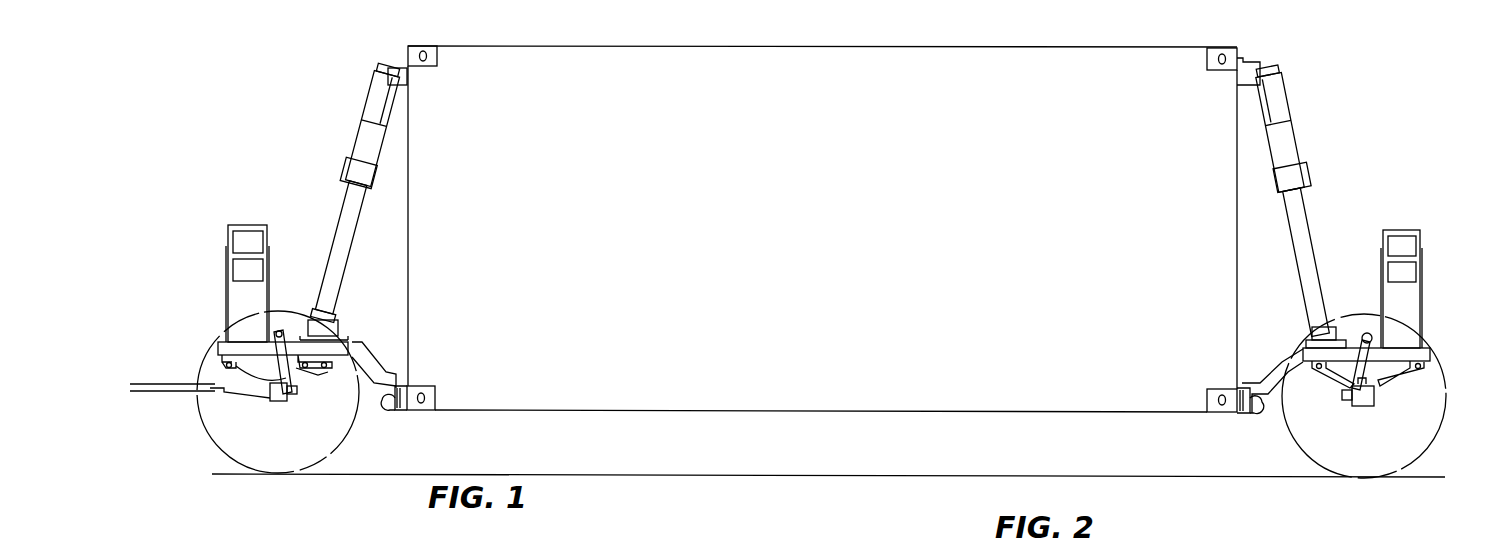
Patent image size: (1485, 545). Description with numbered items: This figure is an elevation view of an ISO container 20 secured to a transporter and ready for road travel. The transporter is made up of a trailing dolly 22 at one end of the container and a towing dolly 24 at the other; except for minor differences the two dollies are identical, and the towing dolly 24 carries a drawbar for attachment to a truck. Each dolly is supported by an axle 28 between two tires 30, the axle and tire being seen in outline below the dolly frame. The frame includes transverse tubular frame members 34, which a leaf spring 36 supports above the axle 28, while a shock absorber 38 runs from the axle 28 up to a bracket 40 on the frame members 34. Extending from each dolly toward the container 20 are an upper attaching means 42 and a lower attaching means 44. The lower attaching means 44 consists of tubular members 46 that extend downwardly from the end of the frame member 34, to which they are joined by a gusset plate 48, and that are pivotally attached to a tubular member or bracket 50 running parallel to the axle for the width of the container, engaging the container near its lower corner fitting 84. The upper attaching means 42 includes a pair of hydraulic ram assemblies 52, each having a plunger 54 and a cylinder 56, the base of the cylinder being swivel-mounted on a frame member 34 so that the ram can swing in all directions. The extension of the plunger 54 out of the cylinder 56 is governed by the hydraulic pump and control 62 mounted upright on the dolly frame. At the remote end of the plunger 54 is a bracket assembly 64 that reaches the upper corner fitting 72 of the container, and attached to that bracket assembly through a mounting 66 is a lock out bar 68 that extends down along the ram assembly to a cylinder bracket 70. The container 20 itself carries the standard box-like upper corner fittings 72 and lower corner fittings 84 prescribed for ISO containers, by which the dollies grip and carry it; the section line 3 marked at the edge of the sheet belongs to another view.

In FIG. 1, the ISO container 20 is at (802, 249).
In FIG. 1, the trailing dolly 22 is at (1334, 251).
In FIG. 2, the trailing dolly 22 is at (1408, 535).
In FIG. 1, the towing dolly 24 is at (309, 195).
In FIG. 2, the towing dolly 24 is at (262, 544).
In FIG. 1, the axle 28 is at (1362, 406).
In FIG. 1, the tire 30 is at (1430, 424).
In FIG. 2, the tire 30 is at (1304, 544).
In FIG. 1, the transverse tubular frame member 34 is at (1416, 355).
In FIG. 1, the leaf spring 36 is at (1398, 378).
In FIG. 1, the shock absorber 38 is at (1374, 396).
In FIG. 1, the bracket 40 is at (1366, 332).
In FIG. 1, the upper attaching means 42 is at (1315, 181).
In FIG. 1, the lower attaching means 44 is at (1277, 361).
In FIG. 1, the tubular member 46 is at (1278, 378).
In FIG. 1, the gusset plate 48 is at (1303, 345).
In FIG. 1, the tubular member or bracket 50 is at (1232, 408).
In FIG. 1, the hydraulic ram assembly 52 is at (1322, 188).
In FIG. 1, the plunger 54 is at (1302, 128).
In FIG. 1, the cylinder 56 is at (1333, 256).
In FIG. 1, the hydraulic pump and control 62 is at (1406, 244).
In FIG. 1, the bracket assembly 64 is at (1252, 72).
In FIG. 2, the bracket assembly 64 is at (351, 544).
In FIG. 1, the mounting 66 is at (1289, 59).
In FIG. 1, the lock out bar 68 is at (1302, 105).
In FIG. 1, the cylinder bracket 70 is at (1313, 171).
In FIG. 1, the upper corner fitting 72 is at (436, 62).
In FIG. 1, the lower corner fitting 84 is at (434, 397).
In FIG. 2, the section line 3- 3 is at (1458, 528).